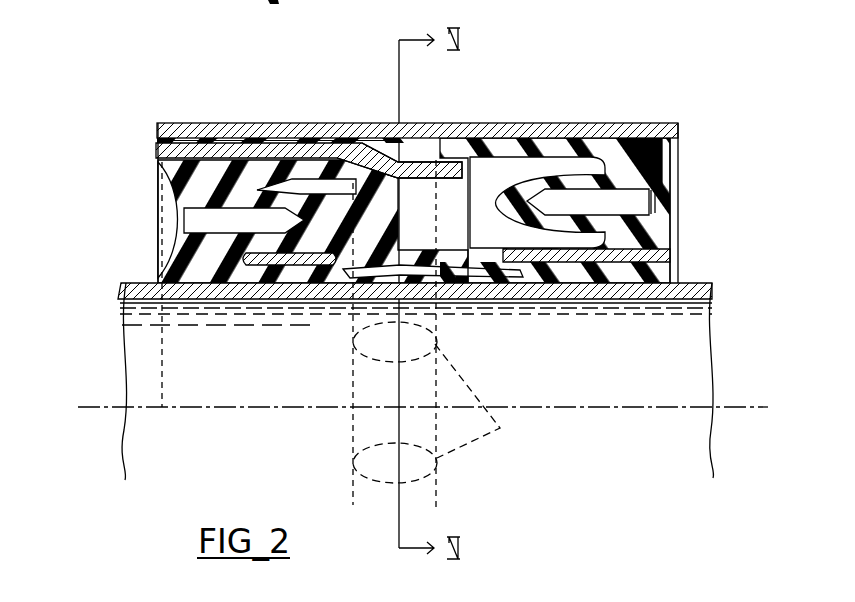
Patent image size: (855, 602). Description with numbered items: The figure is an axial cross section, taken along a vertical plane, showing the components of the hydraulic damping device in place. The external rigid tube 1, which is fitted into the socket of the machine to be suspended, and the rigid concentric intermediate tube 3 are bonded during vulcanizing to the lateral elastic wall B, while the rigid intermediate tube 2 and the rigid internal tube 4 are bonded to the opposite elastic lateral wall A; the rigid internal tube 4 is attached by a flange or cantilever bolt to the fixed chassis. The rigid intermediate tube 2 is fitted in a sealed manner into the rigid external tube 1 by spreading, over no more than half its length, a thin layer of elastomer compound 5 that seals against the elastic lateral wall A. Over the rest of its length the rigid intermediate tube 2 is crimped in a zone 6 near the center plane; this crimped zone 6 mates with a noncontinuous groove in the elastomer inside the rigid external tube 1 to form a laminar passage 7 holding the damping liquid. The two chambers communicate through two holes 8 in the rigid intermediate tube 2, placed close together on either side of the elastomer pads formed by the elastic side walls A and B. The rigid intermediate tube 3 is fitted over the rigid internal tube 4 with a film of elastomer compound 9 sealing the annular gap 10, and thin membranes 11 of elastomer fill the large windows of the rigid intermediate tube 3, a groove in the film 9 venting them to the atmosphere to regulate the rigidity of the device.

The external rigid tube 1 is at (244, 129).
The rigid intermediate tube 2 is at (206, 157).
The rigid intermediate tube 3 is at (660, 237).
The rigid internal tube 4 is at (707, 290).
The thin layer of elastomer compound 5 is at (336, 140).
The crimped zone 6 is at (370, 143).
The laminar passage 7 is at (403, 148).
The holes 8 is at (437, 402).
The film of elastomer compound 9 is at (622, 273).
The annular gap 10 is at (457, 280).
The thin membranes 11 is at (350, 267).
The elastic lateral wall A is at (197, 263).
The lateral elastic wall B is at (662, 153).